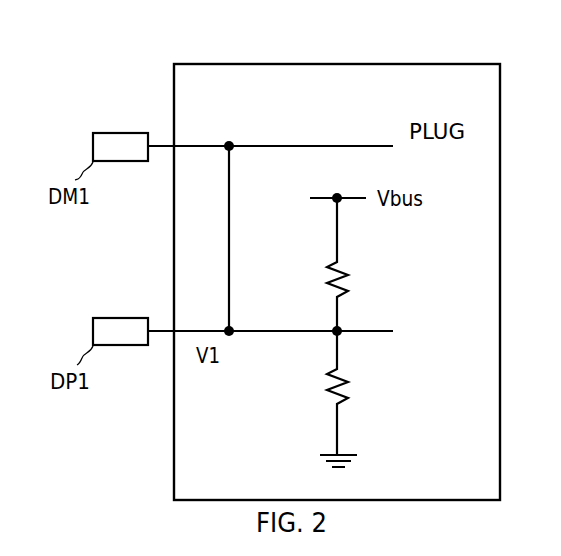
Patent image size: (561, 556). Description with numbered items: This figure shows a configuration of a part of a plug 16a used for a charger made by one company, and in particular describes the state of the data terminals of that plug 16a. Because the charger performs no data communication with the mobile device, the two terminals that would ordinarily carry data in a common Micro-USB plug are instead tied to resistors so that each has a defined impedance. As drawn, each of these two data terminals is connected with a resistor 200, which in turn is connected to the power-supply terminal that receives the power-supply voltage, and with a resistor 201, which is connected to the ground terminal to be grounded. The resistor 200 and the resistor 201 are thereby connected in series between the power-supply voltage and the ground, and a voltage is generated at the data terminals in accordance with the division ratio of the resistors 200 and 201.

The plug 16a is at (418, 63).
The resistor 200 is at (333, 260).
The resistor 201 is at (350, 383).